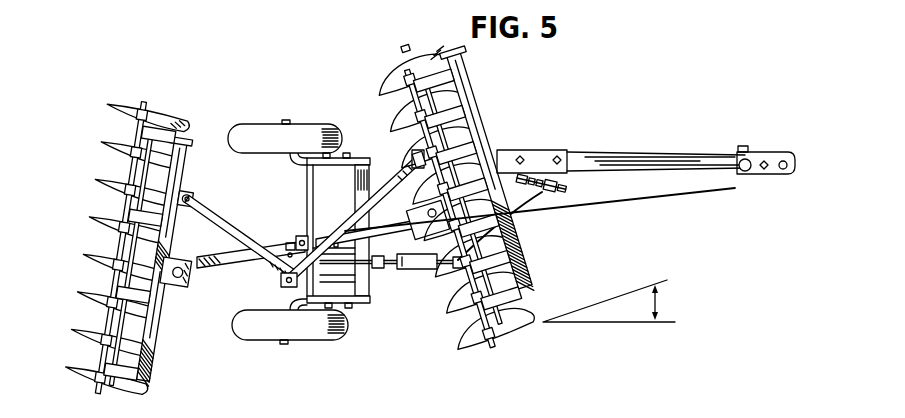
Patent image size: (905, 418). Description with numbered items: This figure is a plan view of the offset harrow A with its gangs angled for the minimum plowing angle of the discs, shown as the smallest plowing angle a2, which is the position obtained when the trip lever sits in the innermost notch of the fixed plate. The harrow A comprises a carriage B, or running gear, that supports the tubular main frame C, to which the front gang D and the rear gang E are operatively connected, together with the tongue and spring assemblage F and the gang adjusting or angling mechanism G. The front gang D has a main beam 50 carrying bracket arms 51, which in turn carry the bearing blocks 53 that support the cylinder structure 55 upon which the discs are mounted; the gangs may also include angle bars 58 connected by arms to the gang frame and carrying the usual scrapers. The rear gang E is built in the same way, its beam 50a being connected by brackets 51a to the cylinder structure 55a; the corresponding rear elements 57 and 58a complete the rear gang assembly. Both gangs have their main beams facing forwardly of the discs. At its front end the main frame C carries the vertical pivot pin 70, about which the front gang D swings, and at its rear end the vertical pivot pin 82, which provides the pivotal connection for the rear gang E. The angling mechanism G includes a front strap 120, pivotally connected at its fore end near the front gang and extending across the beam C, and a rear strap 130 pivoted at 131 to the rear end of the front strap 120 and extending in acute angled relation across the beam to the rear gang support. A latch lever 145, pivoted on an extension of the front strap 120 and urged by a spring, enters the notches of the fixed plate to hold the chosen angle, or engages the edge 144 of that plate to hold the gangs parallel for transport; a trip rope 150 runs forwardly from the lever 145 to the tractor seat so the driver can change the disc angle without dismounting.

The main beam 50 is at (539, 287).
The beam 50a is at (155, 373).
The bracket arms 51 is at (443, 80).
The brackets 51a is at (172, 205).
The bearing blocks 53 is at (429, 136).
The cylinder structure 55 is at (466, 278).
The cylinder structure 55a is at (143, 176).
The spool spacer 57 is at (468, 310).
The angle bars 58 is at (492, 347).
The gang shaft 58a is at (100, 354).
The vertical pivot pin 70 is at (428, 211).
The vertical pivot pin 82 is at (181, 284).
The front strap 120 is at (412, 164).
The rear strap 130 is at (248, 237).
The pivot 131 is at (284, 283).
The edge 144 is at (321, 232).
The latch lever 145 is at (294, 240).
The trip rope 150 is at (582, 207).
The offset harrow A is at (239, 128).
The carriage B is at (247, 327).
The main frame C is at (220, 268).
The front gang D is at (403, 121).
The rear gang E is at (105, 188).
The tongue and spring assemblage F is at (615, 162).
The angling mechanism G is at (247, 226).
The smallest plowing angle a2 is at (609, 301).